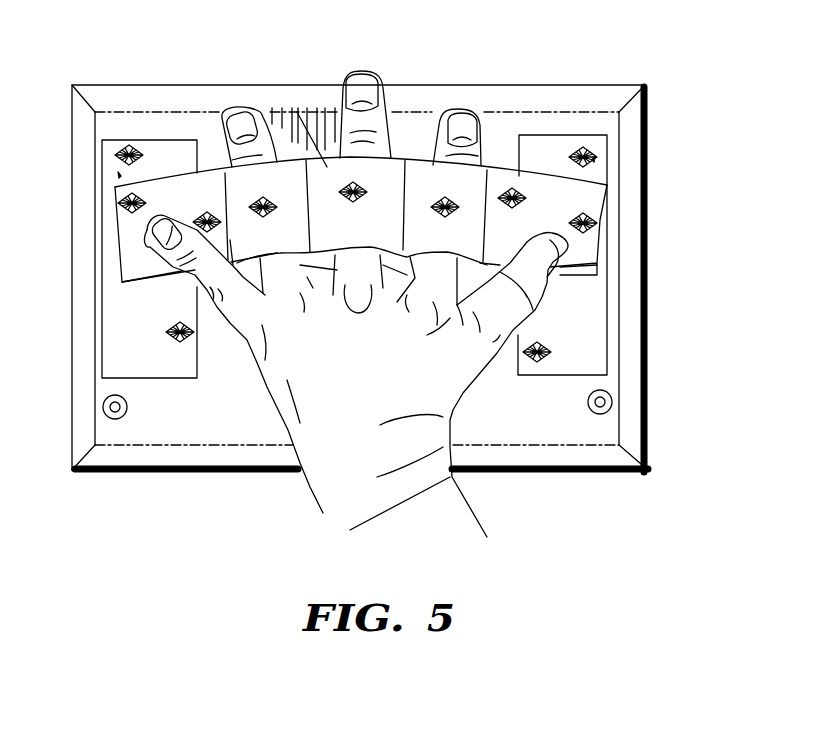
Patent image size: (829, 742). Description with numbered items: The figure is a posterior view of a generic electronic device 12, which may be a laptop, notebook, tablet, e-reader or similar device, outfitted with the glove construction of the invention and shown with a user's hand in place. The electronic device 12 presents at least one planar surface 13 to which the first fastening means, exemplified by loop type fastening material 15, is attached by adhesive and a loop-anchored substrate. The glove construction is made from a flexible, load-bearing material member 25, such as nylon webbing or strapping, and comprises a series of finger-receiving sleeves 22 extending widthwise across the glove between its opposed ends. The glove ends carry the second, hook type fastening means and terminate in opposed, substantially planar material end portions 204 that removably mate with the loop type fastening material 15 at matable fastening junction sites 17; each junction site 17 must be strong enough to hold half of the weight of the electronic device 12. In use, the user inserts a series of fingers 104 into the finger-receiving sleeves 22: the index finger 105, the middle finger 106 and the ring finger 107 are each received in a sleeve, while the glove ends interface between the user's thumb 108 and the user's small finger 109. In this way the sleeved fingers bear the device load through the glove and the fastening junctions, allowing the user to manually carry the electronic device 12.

The electronic device 12 is at (641, 86).
The surface 13 is at (540, 120).
The loop type fastening material 15 is at (117, 327).
The matable fastening junction sites 17 is at (120, 176).
The finger-receiving sleeves 22 is at (295, 167).
The flexible, load-bearing material member 25 is at (182, 192).
The fingers 104 is at (232, 120).
The index finger 105 is at (452, 125).
The middle finger 106 is at (376, 77).
The ring finger 107 is at (241, 112).
The thumb 108 is at (597, 263).
The small finger 109 is at (147, 249).
The planar material end portions 204 is at (123, 220).